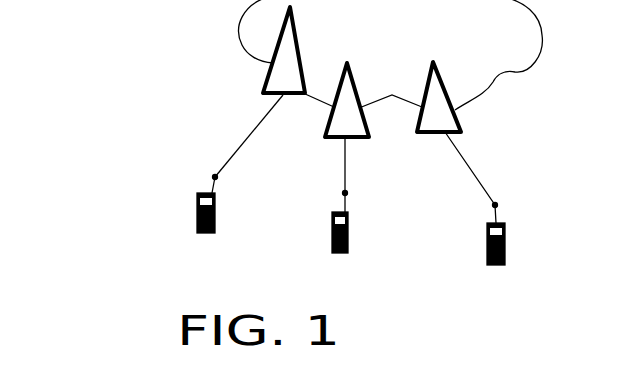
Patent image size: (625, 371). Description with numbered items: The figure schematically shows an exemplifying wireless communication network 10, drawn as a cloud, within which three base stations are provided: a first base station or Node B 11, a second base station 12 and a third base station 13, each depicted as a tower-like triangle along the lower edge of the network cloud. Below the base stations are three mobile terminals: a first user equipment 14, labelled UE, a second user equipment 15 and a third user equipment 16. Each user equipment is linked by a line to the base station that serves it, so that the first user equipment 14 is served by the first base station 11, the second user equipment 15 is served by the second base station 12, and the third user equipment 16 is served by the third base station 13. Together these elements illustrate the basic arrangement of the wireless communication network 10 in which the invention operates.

The wireless communication network 10 is at (391, 55).
The first base station 11 is at (272, 58).
The second base station 12 is at (329, 125).
The third base station 13 is at (458, 118).
The first user equipment 14 is at (198, 192).
The second user equipment 15 is at (332, 235).
The third user equipment 16 is at (488, 252).